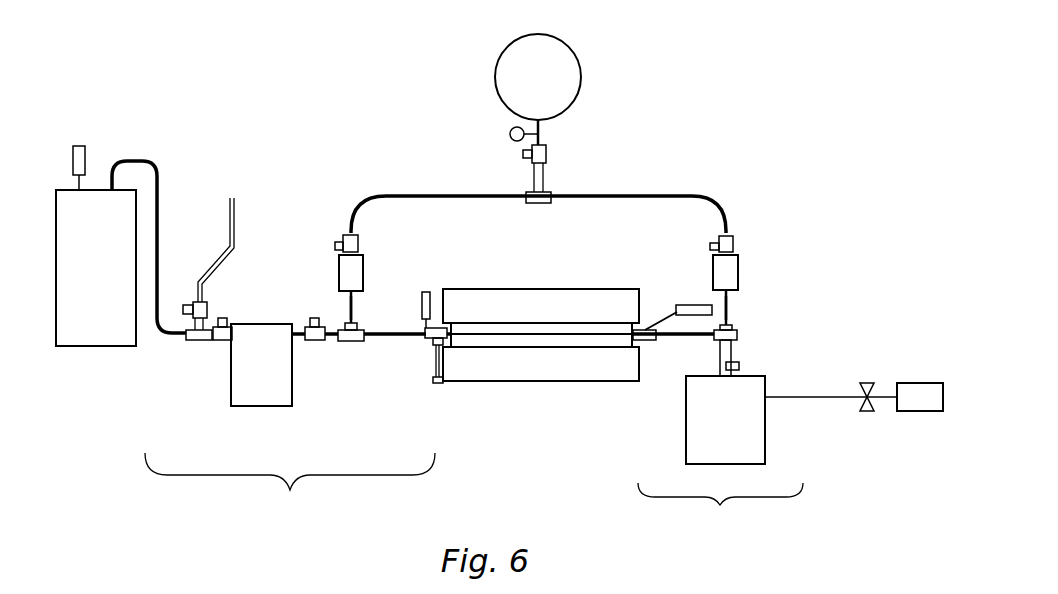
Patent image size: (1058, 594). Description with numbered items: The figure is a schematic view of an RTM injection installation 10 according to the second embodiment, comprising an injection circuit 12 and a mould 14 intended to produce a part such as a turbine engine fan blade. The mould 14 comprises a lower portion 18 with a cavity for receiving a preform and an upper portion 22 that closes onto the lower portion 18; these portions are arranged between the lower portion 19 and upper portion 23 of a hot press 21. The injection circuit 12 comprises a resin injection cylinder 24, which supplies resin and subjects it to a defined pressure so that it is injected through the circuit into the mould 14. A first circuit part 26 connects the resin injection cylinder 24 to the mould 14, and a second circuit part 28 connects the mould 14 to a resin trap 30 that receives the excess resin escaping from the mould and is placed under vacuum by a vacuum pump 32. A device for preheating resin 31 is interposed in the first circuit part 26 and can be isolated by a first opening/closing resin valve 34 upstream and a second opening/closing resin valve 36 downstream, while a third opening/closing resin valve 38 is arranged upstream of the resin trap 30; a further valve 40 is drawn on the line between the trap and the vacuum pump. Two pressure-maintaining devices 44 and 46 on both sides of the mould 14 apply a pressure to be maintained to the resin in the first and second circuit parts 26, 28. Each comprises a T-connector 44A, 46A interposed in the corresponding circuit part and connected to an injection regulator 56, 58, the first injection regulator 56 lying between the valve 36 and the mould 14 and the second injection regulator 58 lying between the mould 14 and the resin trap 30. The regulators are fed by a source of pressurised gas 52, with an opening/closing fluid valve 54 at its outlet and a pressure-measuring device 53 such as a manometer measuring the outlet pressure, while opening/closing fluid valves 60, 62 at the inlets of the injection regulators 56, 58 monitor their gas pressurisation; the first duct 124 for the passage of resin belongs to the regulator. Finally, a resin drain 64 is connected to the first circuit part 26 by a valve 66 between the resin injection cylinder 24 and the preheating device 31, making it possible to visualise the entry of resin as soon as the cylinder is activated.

The RTM injection installation 10 is at (356, 68).
The injection circuit 12 is at (396, 353).
The mould 14 is at (541, 340).
The lower portion 18 is at (590, 342).
The lower portion of hot press 19 is at (504, 366).
The hot press 21 is at (581, 276).
The upper portion 22 is at (530, 330).
The upper portion of hot press 23 is at (485, 300).
The resin injection cylinder 24 is at (96, 246).
The first circuit part 26 is at (290, 489).
The second circuit part 28 is at (720, 508).
The resin trap 30 is at (742, 428).
The device for preheating resin 31 is at (261, 365).
The vacuum pump 32 is at (920, 405).
The first opening/closing resin valve 34 is at (222, 342).
The second opening/closing resin valve 36 is at (316, 342).
The third opening/closing resin valve 38 is at (740, 366).
The valve 40 is at (868, 382).
The pressure-maintaining device 44 is at (359, 356).
The first T-connector 44A is at (358, 331).
The pressure-maintaining device 46 is at (698, 355).
The first T-connector 46A is at (738, 336).
The source of pressurised gas 52 is at (538, 89).
The pressure-measuring device 53 is at (510, 134).
The opening/closing fluid valve 54 is at (547, 152).
The first injection regulator 56 is at (380, 262).
The second injection regulator 58 is at (698, 264).
The opening/closing fluid valve 60 is at (345, 238).
The opening/closing fluid valve 62 is at (730, 236).
The resin drain 64 is at (230, 222).
The valve 66 is at (208, 308).
The first duct 124 is at (350, 308).